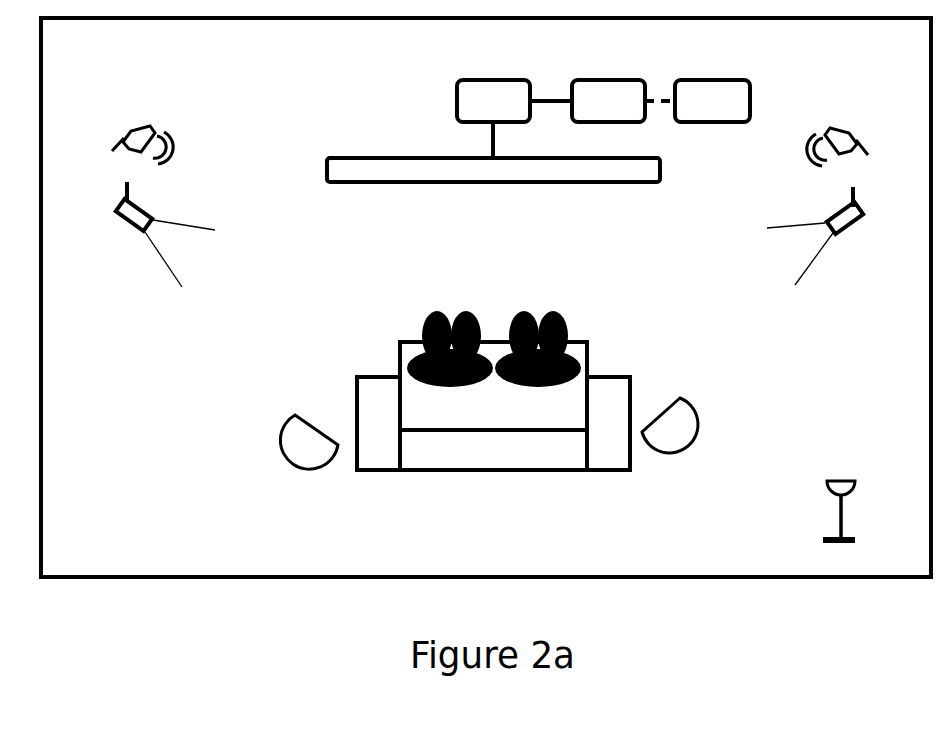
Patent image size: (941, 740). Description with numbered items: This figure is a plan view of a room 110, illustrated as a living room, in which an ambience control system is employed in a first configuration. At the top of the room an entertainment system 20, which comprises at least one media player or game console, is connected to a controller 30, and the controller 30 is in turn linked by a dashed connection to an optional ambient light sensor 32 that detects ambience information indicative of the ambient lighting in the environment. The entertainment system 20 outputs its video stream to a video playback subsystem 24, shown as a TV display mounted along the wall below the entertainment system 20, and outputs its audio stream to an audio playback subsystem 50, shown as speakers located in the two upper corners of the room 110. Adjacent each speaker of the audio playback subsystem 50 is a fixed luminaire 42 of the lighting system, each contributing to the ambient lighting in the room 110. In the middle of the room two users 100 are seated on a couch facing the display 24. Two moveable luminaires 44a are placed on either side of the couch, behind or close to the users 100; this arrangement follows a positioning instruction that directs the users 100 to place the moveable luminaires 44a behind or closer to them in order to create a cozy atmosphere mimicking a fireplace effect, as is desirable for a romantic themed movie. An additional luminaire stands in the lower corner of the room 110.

The entertainment system 20 is at (508, 114).
The controller 30 is at (622, 114).
The ambient light sensor 32 is at (728, 114).
The video playback subsystem 24 is at (515, 182).
The audio playback subsystem 50 is at (491, 160).
The fixed luminaire 42 is at (117, 213).
The users 100 is at (513, 308).
The moveable luminaire 44a is at (282, 438).
The room 110 is at (486, 297).